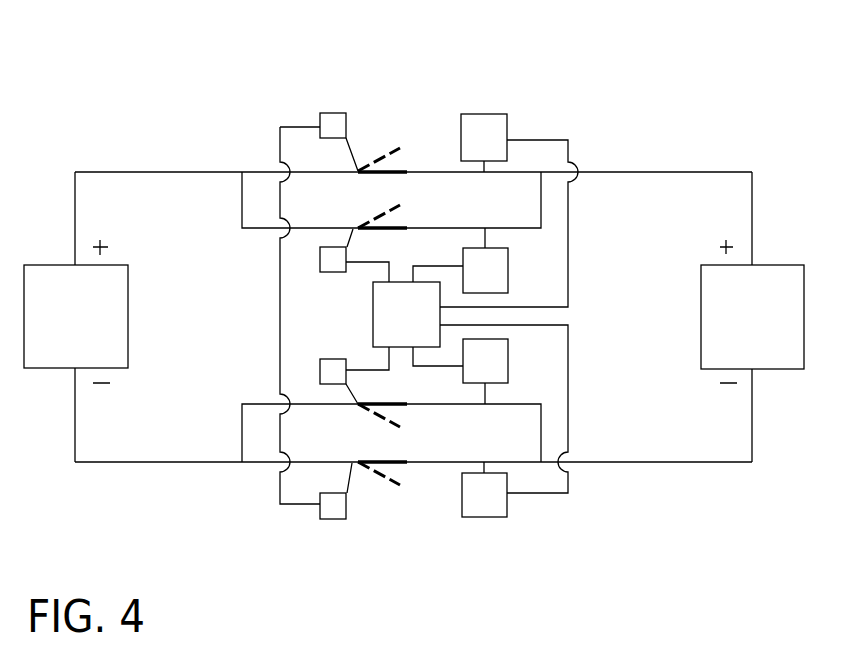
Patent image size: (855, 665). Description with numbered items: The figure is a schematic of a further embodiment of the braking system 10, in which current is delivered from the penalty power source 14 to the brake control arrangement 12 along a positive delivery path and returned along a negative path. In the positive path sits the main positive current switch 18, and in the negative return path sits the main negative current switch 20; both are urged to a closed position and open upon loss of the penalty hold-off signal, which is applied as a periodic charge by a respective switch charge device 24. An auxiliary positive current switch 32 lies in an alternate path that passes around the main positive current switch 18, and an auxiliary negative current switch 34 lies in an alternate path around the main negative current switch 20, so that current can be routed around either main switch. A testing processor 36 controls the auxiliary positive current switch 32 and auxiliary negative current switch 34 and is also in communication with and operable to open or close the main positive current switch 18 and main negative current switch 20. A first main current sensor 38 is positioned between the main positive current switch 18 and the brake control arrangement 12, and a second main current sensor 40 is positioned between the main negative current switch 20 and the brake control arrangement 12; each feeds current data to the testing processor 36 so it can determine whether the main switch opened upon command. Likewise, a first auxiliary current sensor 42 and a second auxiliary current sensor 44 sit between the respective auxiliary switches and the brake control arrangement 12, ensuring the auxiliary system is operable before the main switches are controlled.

The braking system 10 is at (215, 148).
The brake control arrangement 12 is at (768, 332).
The penalty power source 14 is at (92, 331).
The main positive current switch 18 is at (378, 142).
The main negative current switch 20 is at (410, 477).
The switch charge device 24 is at (320, 118).
The auxiliary positive current switch 32 is at (417, 215).
The auxiliary negative current switch 34 is at (413, 417).
The testing processor 36 is at (373, 317).
The first main current sensor 38 is at (620, 29).
The second main current sensor 40 is at (492, 518).
The first auxiliary current sensor 42 is at (713, 112).
The second auxiliary current sensor 44 is at (508, 363).